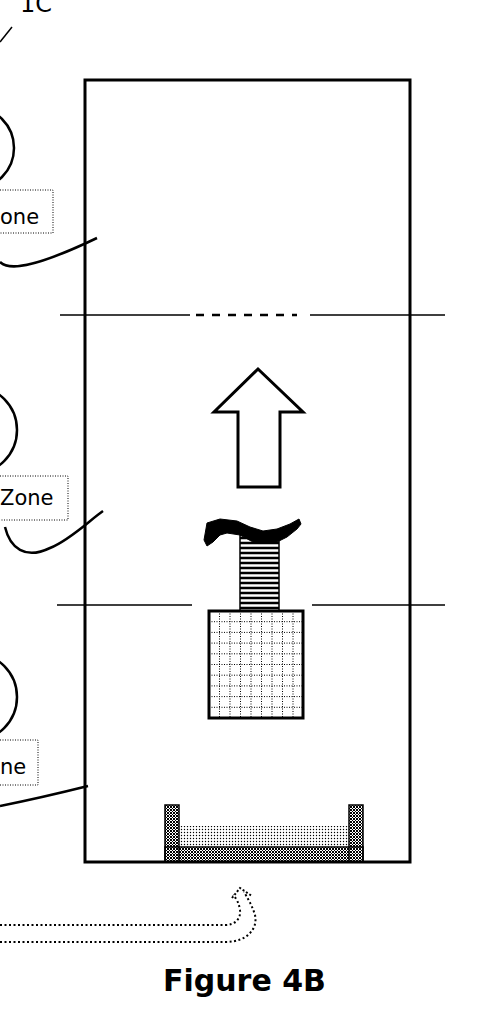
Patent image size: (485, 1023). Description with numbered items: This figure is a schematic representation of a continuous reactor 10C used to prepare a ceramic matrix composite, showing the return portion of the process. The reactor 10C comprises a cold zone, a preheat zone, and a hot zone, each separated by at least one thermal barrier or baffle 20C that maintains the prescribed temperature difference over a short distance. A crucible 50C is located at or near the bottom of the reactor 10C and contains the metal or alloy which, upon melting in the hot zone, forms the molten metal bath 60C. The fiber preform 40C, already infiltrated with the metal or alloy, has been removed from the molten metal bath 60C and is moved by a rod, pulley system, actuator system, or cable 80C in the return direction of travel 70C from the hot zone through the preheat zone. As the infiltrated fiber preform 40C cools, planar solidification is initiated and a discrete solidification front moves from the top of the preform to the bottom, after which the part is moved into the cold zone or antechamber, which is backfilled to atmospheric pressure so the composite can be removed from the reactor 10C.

The reactor 10C is at (318, 79).
The thermal barrier or baffle 20C is at (148, 314).
The fiber preform 40C is at (233, 687).
The crucible 50C is at (162, 836).
The molten metal bath 60C is at (282, 837).
The direction of travel 70C is at (255, 447).
The rod, pulley system, actuator system, or cable 80C is at (278, 578).